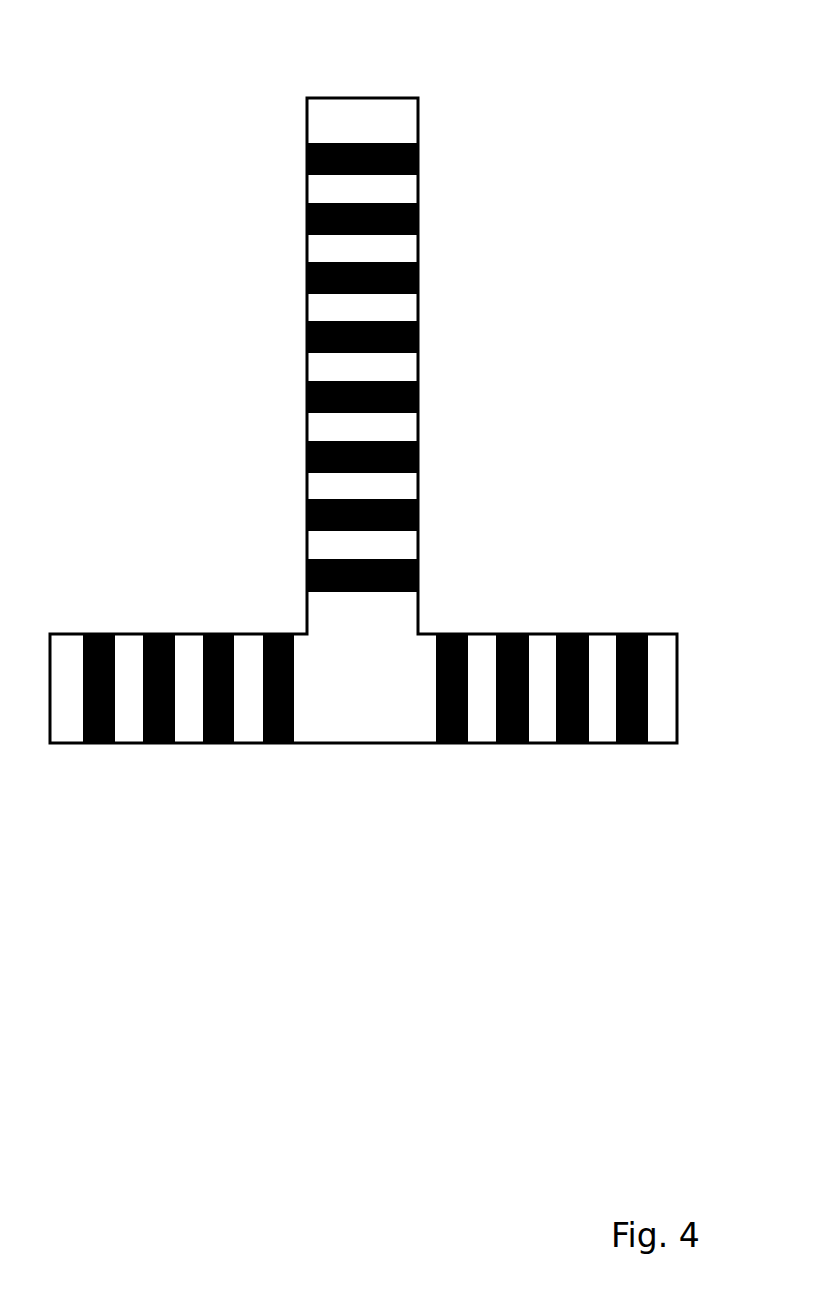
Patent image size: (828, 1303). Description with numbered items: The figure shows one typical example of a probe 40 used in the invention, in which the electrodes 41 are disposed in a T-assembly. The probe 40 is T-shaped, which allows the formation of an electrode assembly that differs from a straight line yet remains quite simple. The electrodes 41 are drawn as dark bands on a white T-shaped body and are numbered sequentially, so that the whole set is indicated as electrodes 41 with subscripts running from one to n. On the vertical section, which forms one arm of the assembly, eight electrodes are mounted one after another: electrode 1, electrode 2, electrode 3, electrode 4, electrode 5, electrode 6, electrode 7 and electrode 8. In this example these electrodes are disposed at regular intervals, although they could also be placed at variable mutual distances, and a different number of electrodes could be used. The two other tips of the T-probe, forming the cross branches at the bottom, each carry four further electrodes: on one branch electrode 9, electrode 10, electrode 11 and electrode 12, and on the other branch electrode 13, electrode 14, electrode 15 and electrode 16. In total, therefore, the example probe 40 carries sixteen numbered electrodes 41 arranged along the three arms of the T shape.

The probe 40 is at (370, 98).
The electrodes 41 is at (401, 213).
The first electrode 1 is at (348, 159).
The second electrode 2 is at (348, 219).
The third electrode 3 is at (348, 278).
The fourth electrode 4 is at (348, 337).
The fifth electrode 5 is at (348, 397).
The sixth electrode 6 is at (348, 457).
The seventh electrode 7 is at (348, 515).
The eighth electrode 8 is at (348, 575).
The ninth electrode 9 is at (99, 707).
The tenth electrode 10 is at (158, 707).
The eleventh electrode 11 is at (217, 707).
The twelfth electrode 12 is at (277, 707).
The thirteenth electrode 13 is at (451, 707).
The fourteenth electrode 14 is at (513, 707).
The fifteenth electrode 15 is at (572, 707).
The sixteenth electrode 16 is at (632, 707).